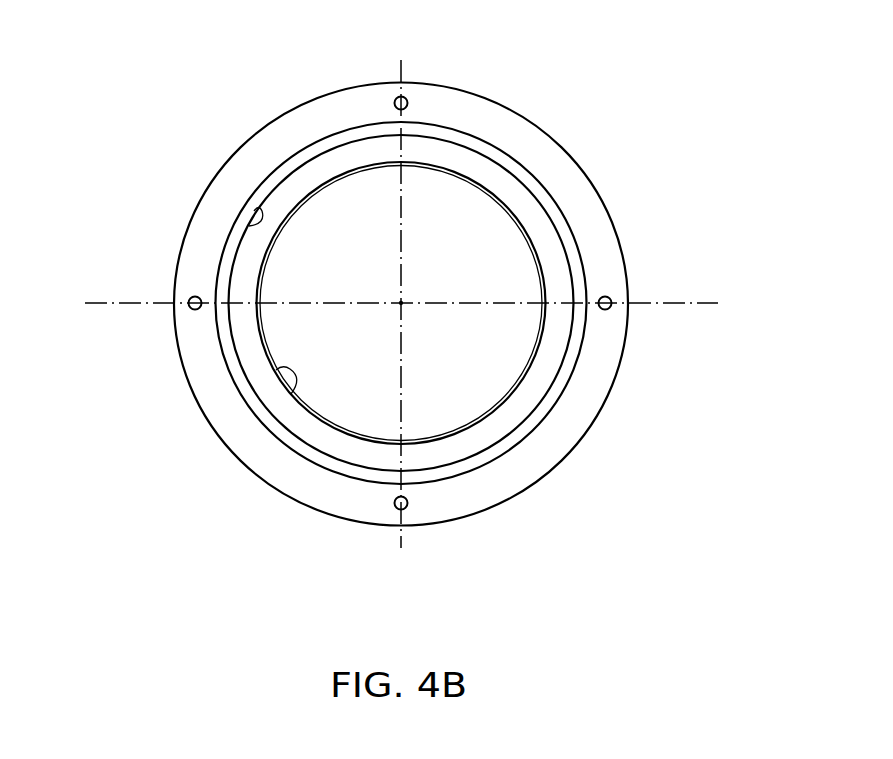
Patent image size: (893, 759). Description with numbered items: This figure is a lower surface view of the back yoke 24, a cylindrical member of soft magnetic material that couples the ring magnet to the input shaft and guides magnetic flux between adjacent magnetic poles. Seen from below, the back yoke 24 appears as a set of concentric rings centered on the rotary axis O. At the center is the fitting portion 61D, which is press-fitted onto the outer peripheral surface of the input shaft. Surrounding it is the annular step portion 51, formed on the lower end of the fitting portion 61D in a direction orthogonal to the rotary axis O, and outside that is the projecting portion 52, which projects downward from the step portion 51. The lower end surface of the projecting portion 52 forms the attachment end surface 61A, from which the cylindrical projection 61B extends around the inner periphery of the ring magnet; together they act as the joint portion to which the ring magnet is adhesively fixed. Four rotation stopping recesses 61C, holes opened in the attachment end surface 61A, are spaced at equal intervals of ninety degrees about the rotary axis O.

The back yoke 24 is at (218, 170).
The step portion 51 is at (282, 195).
The projecting portion 52 is at (249, 226).
The attachment end surface 61A is at (197, 350).
The projection 61B is at (242, 377).
The rotation stopping recesses 61C is at (190, 308).
The fitting portion 61D is at (291, 394).
The rotary axis O is at (401, 303).